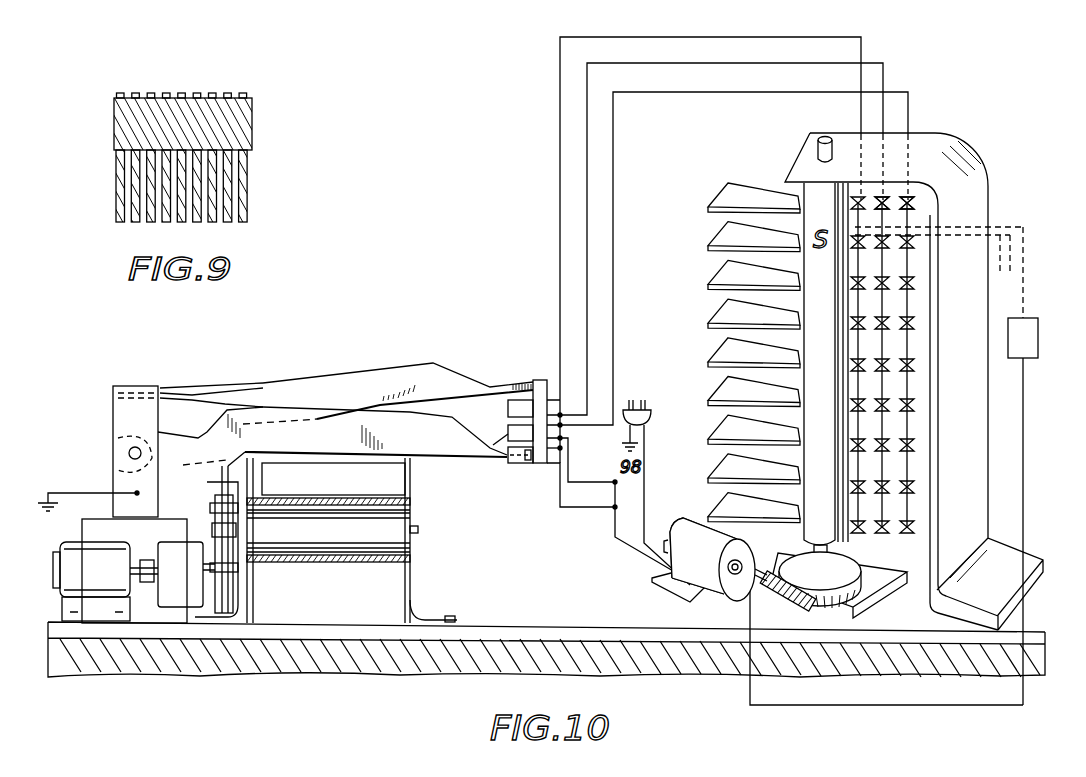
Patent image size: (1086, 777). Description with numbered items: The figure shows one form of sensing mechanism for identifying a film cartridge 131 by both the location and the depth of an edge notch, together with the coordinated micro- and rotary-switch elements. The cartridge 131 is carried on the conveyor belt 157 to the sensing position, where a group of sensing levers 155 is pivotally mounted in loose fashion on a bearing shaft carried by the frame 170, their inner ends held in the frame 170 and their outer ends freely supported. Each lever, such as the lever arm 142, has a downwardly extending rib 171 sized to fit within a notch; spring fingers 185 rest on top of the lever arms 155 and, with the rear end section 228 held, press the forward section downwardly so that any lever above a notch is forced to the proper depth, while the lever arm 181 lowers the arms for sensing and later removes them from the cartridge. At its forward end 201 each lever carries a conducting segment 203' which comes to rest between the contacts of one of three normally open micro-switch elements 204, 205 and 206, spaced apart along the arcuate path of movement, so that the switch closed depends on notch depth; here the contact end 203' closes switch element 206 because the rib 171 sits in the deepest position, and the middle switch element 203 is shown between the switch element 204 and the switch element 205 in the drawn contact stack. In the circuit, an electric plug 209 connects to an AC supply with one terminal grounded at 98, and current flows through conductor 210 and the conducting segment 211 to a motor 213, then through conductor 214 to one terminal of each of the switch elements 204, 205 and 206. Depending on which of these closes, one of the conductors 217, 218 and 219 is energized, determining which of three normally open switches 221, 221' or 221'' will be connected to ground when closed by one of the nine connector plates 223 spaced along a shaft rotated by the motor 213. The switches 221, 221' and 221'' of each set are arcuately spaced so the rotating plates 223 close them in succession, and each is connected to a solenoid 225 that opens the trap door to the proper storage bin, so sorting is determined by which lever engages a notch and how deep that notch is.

In FIG. 9, the sensing levers 155 is at (255, 120).
In FIG. 10, the sensing levers 155 is at (400, 358).
In FIG. 9, the depending rib 171 is at (252, 207).
In FIG. 10, the depending rib 171 is at (262, 473).
In FIG. 9, the spring fingers 185 is at (209, 94).
In FIG. 10, the spring fingers 185 is at (213, 386).
In FIG. 10, the frame 170 is at (113, 402).
In FIG. 10, the rear end section 228 is at (120, 443).
In FIG. 10, the ground 98 is at (38, 504).
In FIG. 10, the lever arm 181 is at (212, 490).
In FIG. 10, the cartridge 131 is at (405, 475).
In FIG. 10, the conveyor belt 157 is at (363, 503).
In FIG. 10, the lever arm 142 is at (321, 428).
In FIG. 10, the forward end 201 is at (448, 365).
In FIG. 10, the conducting segment 203' is at (518, 403).
In FIG. 10, the micro-switch element 204 is at (527, 405).
In FIG. 10, the contact 203 is at (515, 470).
In FIG. 10, the micro-switch element 205 is at (514, 465).
In FIG. 10, the micro-switch element 206 is at (528, 466).
In FIG. 10, the conductor 219 is at (560, 157).
In FIG. 10, the conductor 218 is at (590, 156).
In FIG. 10, the conductor 217 is at (614, 186).
In FIG. 10, the conductor 214 is at (615, 528).
In FIG. 10, the electric plug 209 is at (652, 412).
In FIG. 10, the conductor 210 is at (648, 479).
In FIG. 10, the motor 213 is at (681, 522).
In FIG. 10, the conducting segment 211 is at (706, 590).
In FIG. 10, the connector plates 223 is at (722, 192).
In FIG. 10, the switch 221 is at (945, 365).
In FIG. 10, the switch 221' is at (956, 196).
In FIG. 10, the switch 221'' is at (971, 184).
In FIG. 10, the solenoid 225 is at (1025, 360).